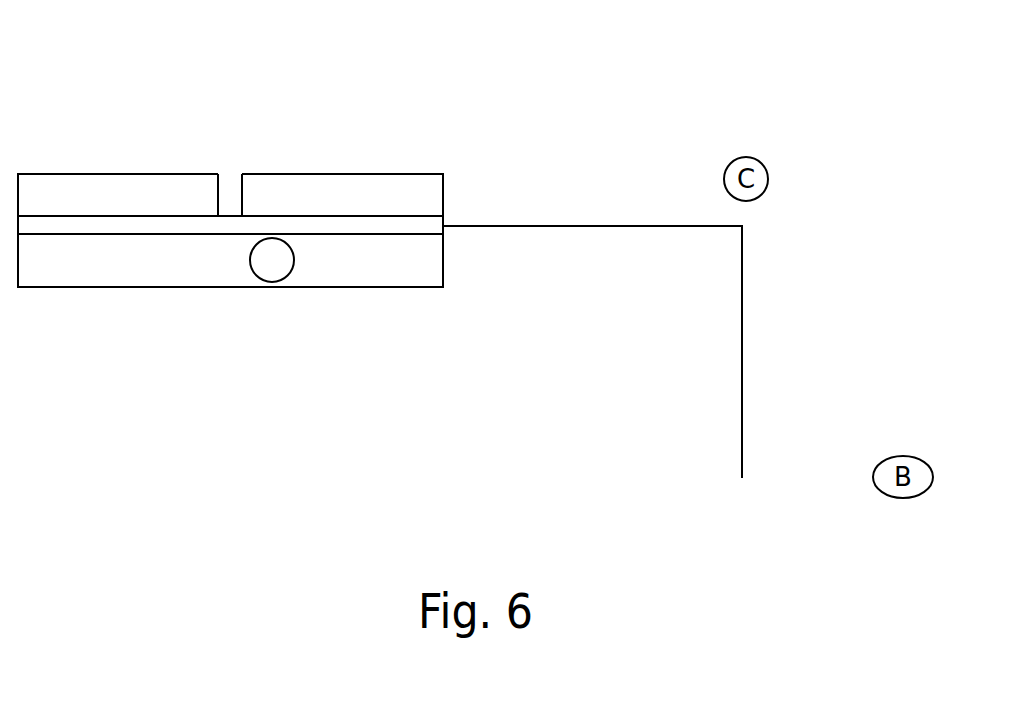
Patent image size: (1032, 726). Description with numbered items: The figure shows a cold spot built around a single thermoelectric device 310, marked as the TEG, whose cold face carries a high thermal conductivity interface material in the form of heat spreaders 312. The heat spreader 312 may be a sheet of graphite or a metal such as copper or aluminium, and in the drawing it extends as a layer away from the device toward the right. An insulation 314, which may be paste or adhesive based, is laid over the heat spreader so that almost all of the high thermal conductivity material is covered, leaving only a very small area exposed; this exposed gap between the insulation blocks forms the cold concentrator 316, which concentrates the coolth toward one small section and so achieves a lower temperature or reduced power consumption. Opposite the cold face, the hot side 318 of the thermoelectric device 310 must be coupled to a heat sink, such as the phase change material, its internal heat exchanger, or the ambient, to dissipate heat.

The thermoelectric device 310 is at (230, 251).
The heat spreader 312 is at (640, 385).
The insulation 314 is at (456, 176).
The cold concentrator 316 is at (230, 166).
The hot side 318 is at (318, 288).